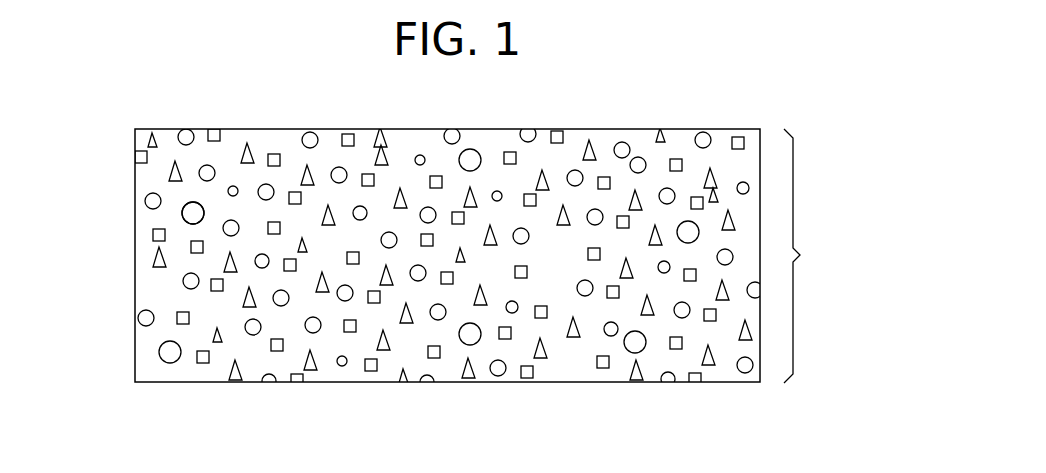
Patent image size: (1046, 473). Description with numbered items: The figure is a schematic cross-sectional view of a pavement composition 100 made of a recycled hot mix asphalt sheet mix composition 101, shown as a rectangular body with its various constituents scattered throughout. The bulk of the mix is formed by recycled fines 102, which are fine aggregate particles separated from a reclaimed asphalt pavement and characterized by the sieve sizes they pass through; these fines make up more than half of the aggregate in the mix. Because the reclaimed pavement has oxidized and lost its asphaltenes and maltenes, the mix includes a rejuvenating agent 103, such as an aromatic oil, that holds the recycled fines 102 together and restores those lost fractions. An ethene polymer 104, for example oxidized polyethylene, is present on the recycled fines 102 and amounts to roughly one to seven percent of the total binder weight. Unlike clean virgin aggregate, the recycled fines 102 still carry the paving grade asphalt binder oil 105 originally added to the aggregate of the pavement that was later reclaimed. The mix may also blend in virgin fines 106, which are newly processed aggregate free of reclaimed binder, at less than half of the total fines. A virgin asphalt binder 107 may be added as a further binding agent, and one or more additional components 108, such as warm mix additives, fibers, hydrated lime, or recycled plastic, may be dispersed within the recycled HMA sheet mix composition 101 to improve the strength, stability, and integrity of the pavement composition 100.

The pavement composition 100 is at (715, 82).
The recycled HMA sheet mix composition 101 is at (800, 255).
The recycled fines 102 is at (188, 216).
The rejuvenating agent 103 is at (344, 368).
The ethene polymer 104 is at (573, 140).
The paving grade asphalt binder oil 105 is at (191, 202).
The virgin fines 106 is at (540, 182).
The virgin asphalt binder 107 is at (419, 155).
The additional components 108 is at (611, 300).